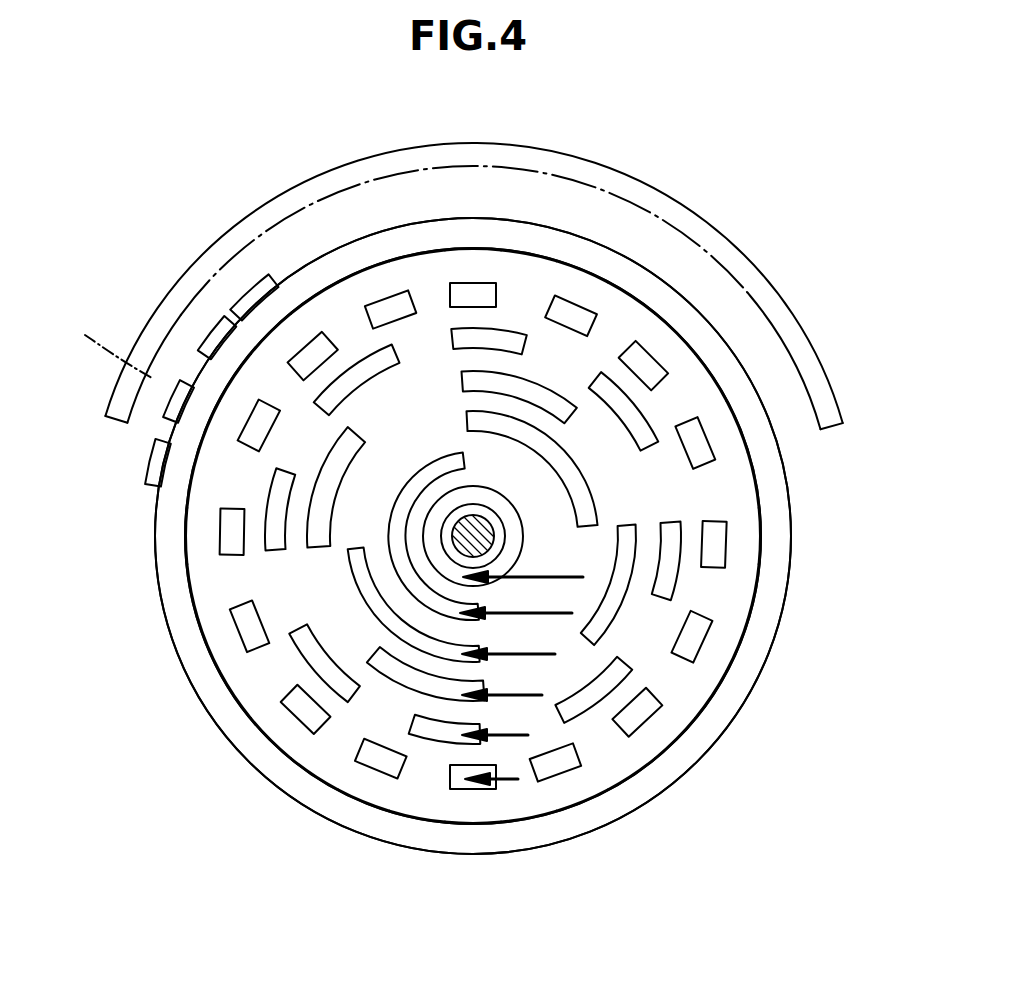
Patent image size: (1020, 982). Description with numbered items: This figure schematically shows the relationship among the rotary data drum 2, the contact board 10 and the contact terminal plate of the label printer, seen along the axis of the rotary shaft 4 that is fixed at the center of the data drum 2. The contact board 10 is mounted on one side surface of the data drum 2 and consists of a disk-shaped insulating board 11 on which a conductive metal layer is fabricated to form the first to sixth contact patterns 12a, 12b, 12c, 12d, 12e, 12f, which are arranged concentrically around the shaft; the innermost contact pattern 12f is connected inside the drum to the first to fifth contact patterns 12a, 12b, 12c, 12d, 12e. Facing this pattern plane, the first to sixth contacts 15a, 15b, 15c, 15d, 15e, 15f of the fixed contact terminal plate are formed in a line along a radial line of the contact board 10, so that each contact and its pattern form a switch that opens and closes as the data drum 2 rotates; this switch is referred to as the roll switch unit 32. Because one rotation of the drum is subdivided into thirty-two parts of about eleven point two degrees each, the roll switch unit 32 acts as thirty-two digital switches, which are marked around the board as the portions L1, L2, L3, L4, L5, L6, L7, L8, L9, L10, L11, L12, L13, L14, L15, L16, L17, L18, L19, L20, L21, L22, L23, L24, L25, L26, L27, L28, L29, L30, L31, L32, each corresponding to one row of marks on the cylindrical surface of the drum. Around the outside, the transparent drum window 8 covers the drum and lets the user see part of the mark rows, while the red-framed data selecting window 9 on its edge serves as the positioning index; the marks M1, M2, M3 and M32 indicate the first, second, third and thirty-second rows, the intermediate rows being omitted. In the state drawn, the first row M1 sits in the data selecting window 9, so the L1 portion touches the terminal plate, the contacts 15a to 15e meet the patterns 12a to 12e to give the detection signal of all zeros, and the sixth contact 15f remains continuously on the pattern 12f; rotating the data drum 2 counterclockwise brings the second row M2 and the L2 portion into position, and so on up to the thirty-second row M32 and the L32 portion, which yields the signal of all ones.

The rotary data drum 2 is at (657, 777).
The rotary shaft 4 is at (488, 526).
The drum window 8 is at (735, 250).
The data selecting window 9 is at (107, 347).
The contact board 10 is at (442, 822).
The insulating board 11 is at (396, 795).
The roll switch unit 32 is at (780, 455).
The first contact pattern 12a is at (250, 640).
The second contact pattern 12b is at (322, 660).
The third contact pattern 12c is at (385, 668).
The fourth contact pattern 12d is at (362, 573).
The fifth contact pattern 12e is at (390, 518).
The sixth contact pattern 12f is at (512, 535).
The first contact 15a is at (503, 782).
The second contact 15b is at (520, 740).
The third contact 15c is at (530, 701).
The fourth contact 15d is at (540, 660).
The fifth contact 15e is at (572, 618).
The sixth contact 15f is at (583, 580).
The marks in the first row M1 is at (176, 408).
The marks in the second row M2 is at (222, 330).
The marks in the third row M3 is at (272, 282).
The marks in the 32nd row M32 is at (160, 470).
The digital switch L1 is at (473, 856).
The digital switch L2 is at (417, 847).
The digital switch L3 is at (359, 826).
The digital switch L4 is at (305, 796).
The digital switch L5 is at (255, 755).
The digital switch L6 is at (213, 707).
The digital switch L7 is at (182, 646).
The digital switch L8 is at (161, 591).
The digital switch L9 is at (153, 536).
The digital switch L10 is at (152, 476).
The digital switch L11 is at (178, 416).
The digital switch L12 is at (210, 360).
The digital switch L13 is at (249, 315).
The digital switch L14 is at (303, 273).
The digital switch L15 is at (364, 241).
The digital switch L16 is at (423, 225).
The digital switch L17 is at (481, 218).
The digital switch L18 is at (539, 229).
The digital switch L19 is at (595, 248).
The digital switch L20 is at (648, 278).
The digital switch L21 is at (692, 316).
The digital switch L22 is at (732, 364).
The digital switch L23 is at (767, 425).
The digital switch L24 is at (791, 480).
The digital switch L25 is at (799, 536).
The digital switch L26 is at (790, 592).
The digital switch L27 is at (770, 647).
The digital switch L28 is at (739, 702).
The digital switch L29 is at (698, 754).
The digital switch L30 is at (645, 800).
The digital switch L31 is at (582, 830).
The digital switch L32 is at (528, 849).